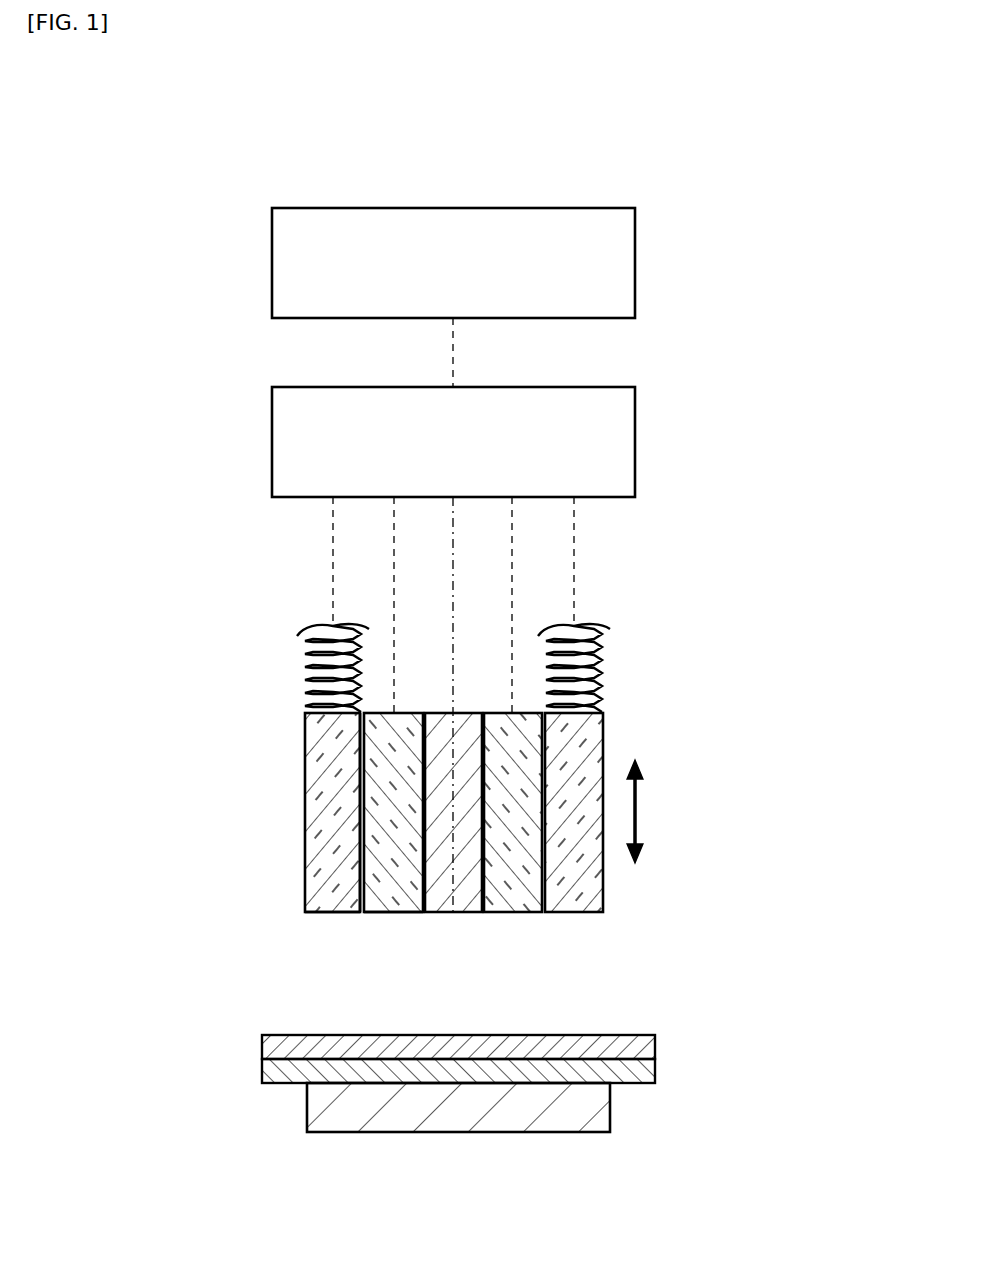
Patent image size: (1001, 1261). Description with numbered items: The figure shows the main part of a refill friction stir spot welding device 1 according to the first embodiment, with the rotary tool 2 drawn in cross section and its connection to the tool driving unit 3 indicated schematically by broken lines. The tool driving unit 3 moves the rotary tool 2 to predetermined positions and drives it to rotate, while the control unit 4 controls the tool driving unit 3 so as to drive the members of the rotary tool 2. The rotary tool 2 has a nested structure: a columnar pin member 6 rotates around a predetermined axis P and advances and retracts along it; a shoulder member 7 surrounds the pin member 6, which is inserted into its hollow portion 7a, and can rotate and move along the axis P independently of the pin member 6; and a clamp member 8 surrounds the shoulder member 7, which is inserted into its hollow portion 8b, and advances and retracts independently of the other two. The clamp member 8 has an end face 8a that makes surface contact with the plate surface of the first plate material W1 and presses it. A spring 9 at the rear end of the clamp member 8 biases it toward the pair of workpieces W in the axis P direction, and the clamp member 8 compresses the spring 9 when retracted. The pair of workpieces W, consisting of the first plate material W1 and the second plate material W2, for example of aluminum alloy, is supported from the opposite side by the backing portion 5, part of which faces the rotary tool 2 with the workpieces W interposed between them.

The refill friction stir spot welding device 1 is at (508, 649).
The rotary tool 2 is at (469, 748).
The tool driving unit 3 is at (635, 440).
The control unit 4 is at (635, 261).
The backing portion 5 is at (613, 1108).
The pin member 6 is at (440, 863).
The shoulder member 7 is at (424, 833).
The hollow portion 7a is at (385, 845).
The clamp member 8 is at (313, 738).
The end face 8a is at (322, 913).
The hollow portion 8b is at (360, 775).
The spring 9 is at (305, 668).
The axis P is at (455, 782).
The pair of workpieces W is at (531, 1063).
The first plate material W1 is at (655, 1040).
The second plate material W2 is at (655, 1070).